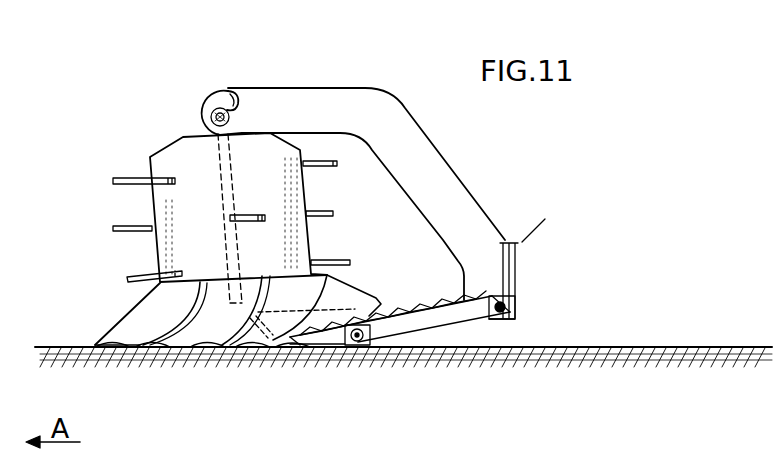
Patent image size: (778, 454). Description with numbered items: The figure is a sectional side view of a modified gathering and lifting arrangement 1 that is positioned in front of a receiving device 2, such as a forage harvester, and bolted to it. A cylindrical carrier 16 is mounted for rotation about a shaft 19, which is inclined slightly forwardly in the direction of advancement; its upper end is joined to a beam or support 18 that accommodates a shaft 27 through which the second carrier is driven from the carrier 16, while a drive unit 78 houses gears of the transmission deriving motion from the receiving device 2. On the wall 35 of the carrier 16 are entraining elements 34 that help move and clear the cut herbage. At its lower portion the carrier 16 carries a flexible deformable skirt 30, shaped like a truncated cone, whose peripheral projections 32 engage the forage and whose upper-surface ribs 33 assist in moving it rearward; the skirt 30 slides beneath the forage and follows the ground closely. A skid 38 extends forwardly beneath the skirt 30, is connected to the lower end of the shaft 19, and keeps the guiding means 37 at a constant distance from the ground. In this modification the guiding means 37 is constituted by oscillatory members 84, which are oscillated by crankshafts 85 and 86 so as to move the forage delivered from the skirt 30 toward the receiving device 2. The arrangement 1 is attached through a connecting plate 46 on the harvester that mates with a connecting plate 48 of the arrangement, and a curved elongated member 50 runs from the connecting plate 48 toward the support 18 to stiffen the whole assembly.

The gathering and lifting arrangement 1 is at (155, 147).
The receiving device 2 is at (520, 258).
The cylindrical carrier 16 is at (170, 170).
The beam or support 18 is at (212, 118).
The shaft 19 is at (220, 200).
The shaft 27 is at (218, 95).
The flexible deformable skirt 30 is at (143, 320).
The projections 32 is at (128, 348).
The ribs 33 is at (173, 322).
The entraining elements 34 is at (113, 228).
The wall 35 is at (157, 245).
The guiding means 37 is at (437, 318).
The skid 38 is at (271, 340).
The connecting plate 46 is at (516, 268).
The connecting plate 48 is at (520, 306).
The curved elongated member 50 is at (328, 98).
The drive unit 78 is at (205, 110).
The oscillatory members 84 is at (408, 315).
The crankshaft 85 is at (360, 345).
The crankshaft 86 is at (498, 320).